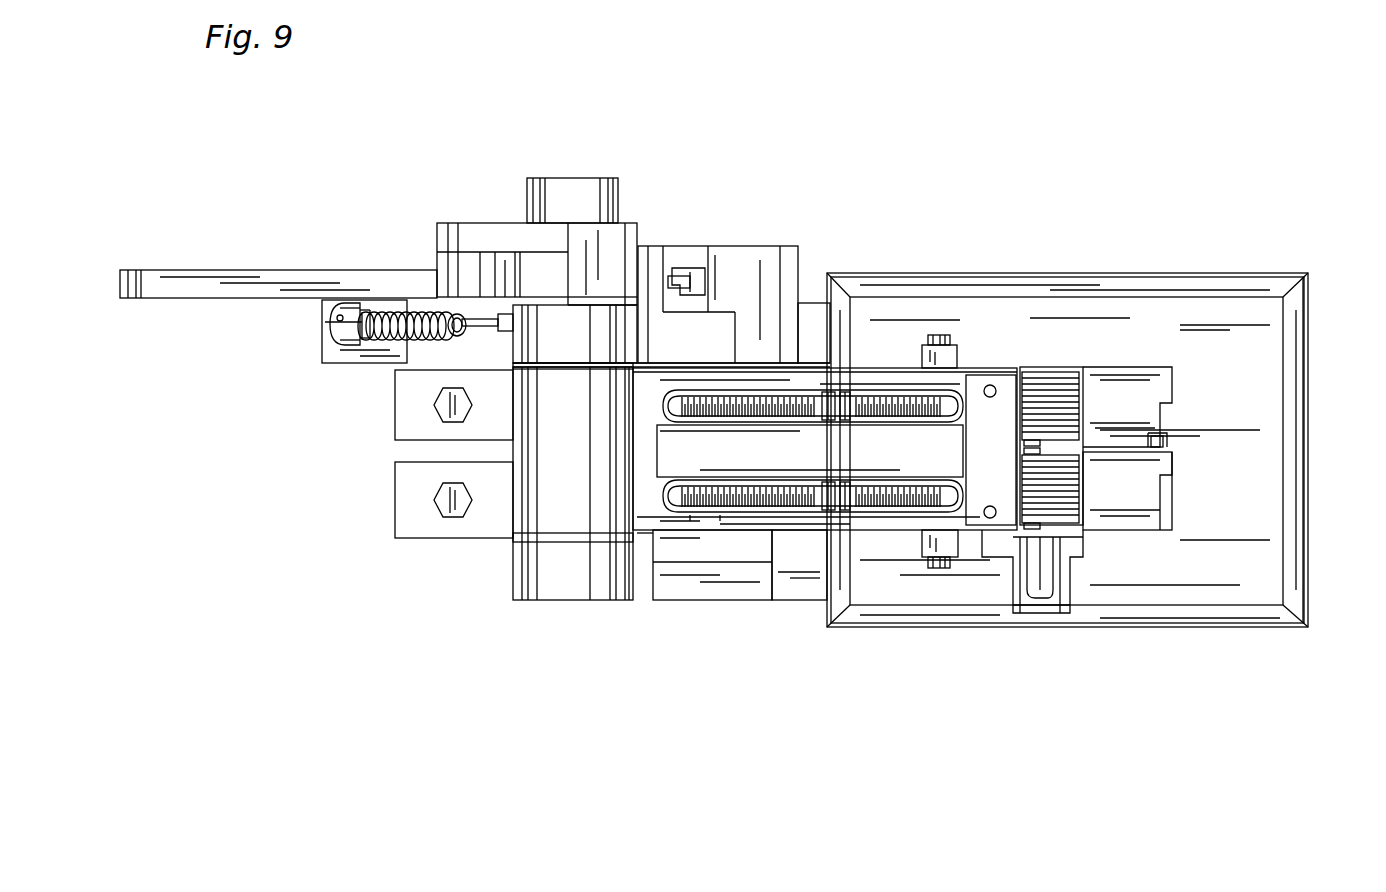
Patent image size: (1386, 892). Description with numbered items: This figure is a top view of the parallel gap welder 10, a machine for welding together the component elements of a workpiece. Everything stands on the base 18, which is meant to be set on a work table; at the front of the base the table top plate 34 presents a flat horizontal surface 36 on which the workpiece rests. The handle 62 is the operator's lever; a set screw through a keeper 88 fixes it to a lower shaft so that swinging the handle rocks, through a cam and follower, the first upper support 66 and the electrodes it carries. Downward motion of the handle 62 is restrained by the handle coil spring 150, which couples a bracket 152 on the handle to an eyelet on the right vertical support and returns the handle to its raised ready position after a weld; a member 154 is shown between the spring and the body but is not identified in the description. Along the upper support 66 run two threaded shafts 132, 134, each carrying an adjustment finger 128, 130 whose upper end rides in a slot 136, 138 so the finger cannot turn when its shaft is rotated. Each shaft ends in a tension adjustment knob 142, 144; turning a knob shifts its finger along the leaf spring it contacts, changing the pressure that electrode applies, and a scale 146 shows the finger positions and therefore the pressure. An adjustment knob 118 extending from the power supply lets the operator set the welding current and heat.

The parallel gap welder 10 is at (396, 134).
The base 18 is at (1140, 273).
The table top plate 34 is at (1310, 342).
The flat horizontal surface 36 is at (1267, 323).
The handle 62 is at (220, 268).
The first upper support 66 is at (694, 533).
The keeper 88 is at (575, 178).
The adjustment knob 118 is at (1028, 612).
The adjustment finger 128 is at (848, 400).
The adjustment finger 130 is at (862, 505).
The threaded shaft 132 is at (893, 400).
The threaded shaft 134 is at (895, 505).
The slot 136 is at (690, 392).
The slot 138 is at (765, 505).
The tension adjustment knob 142 is at (1085, 405).
The tension adjustment knob 144 is at (1085, 518).
The scale 146 is at (808, 462).
The handle coil spring 150 is at (383, 306).
The bracket 152 is at (345, 362).
The spring rod 154 is at (487, 330).